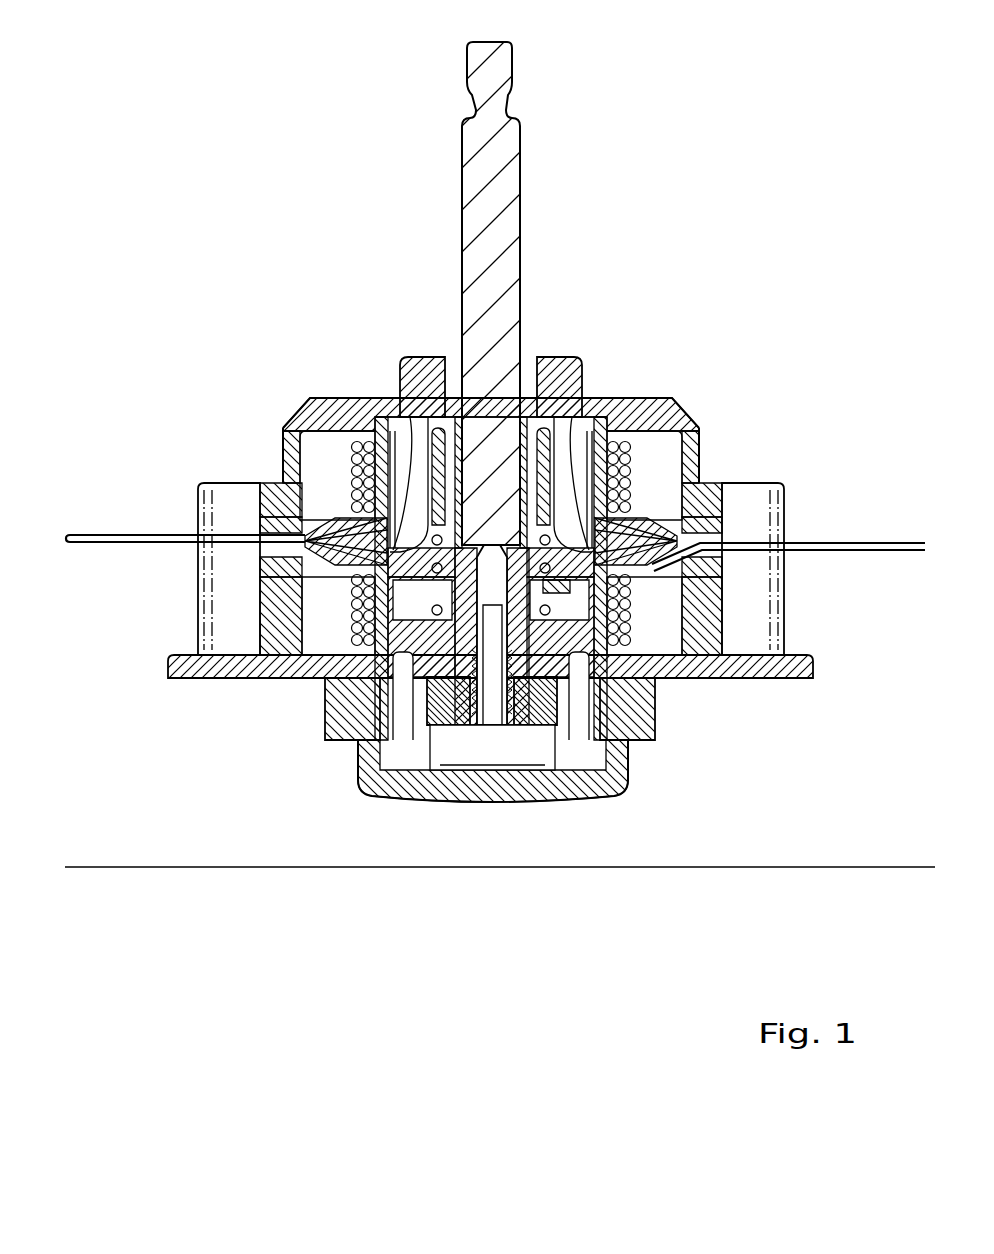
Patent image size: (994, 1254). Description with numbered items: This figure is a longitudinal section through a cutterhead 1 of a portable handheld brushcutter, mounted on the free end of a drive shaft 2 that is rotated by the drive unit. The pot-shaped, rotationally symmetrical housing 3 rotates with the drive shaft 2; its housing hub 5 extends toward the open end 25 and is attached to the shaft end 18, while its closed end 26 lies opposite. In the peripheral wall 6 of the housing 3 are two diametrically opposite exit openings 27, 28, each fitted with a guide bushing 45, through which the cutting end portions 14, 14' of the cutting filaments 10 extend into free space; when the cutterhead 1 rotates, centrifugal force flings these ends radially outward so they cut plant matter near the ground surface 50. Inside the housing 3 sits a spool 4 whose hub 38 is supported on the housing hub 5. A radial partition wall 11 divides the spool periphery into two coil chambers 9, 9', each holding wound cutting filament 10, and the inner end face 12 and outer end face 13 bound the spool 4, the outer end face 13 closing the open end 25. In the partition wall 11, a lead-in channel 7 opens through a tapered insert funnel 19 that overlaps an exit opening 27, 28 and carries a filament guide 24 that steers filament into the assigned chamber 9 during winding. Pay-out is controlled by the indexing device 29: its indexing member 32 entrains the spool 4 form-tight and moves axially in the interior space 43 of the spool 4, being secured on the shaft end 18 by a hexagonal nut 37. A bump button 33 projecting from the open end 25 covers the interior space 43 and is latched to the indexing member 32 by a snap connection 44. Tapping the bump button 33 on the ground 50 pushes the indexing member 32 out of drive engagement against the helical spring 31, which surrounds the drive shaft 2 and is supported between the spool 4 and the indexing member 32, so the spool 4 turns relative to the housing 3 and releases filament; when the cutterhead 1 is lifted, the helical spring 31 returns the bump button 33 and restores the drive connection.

The cutterhead 1 is at (745, 183).
The drive shaft 2 is at (512, 146).
The housing 3 is at (298, 430).
The spool 4 is at (410, 462).
The housing hub 5 is at (458, 495).
The peripheral wall 6 is at (248, 620).
The lead-in channel 7 is at (660, 430).
The coil chamber 9 is at (328, 412).
The coil chamber 9' is at (306, 613).
The cutting filament 10 is at (349, 452).
The radial partition wall 11 is at (302, 538).
The end face 12 is at (641, 468).
The end face 13 is at (670, 664).
The cutting end portion 14 is at (185, 468).
The cutting end portion 14' is at (790, 501).
The shaft end 18 is at (560, 705).
The insert funnel 19 is at (665, 533).
The filament guide 24 is at (268, 560).
The open end 25 is at (672, 690).
The closed end 26 is at (622, 396).
The exit opening 27 is at (246, 524).
The exit opening 28 is at (738, 532).
The indexing device 29 is at (700, 600).
The helical spring 31 is at (642, 692).
The indexing member 32 is at (502, 718).
The bump button 33 is at (382, 790).
The hexagonal nut 37 is at (462, 728).
The hub 38 is at (553, 462).
The interior space 43 is at (700, 620).
The snap connection 44 is at (425, 668).
The guide bushing 45 is at (250, 606).
The ground surface 50 is at (510, 921).